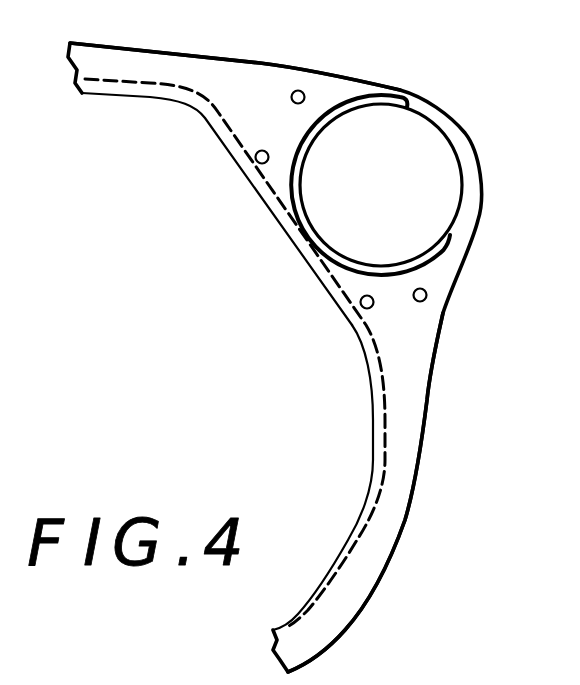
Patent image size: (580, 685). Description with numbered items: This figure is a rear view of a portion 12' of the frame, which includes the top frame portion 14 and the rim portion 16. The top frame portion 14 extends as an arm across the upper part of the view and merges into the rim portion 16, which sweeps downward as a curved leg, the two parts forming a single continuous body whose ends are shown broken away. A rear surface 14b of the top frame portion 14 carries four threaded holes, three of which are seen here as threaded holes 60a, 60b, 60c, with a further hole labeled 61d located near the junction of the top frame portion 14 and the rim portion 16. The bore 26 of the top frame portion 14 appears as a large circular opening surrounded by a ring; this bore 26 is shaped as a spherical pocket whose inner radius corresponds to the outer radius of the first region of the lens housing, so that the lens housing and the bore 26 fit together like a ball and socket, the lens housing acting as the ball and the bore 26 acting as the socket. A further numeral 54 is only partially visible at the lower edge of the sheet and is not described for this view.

The portion of the frame 12' is at (296, 357).
The top frame portion 14 is at (185, 65).
The rear surface 14b is at (252, 103).
The rim portion 16 is at (408, 408).
The bore 26 is at (428, 176).
The threaded hole 60a is at (302, 90).
The threaded hole 60b is at (258, 164).
The threaded hole 60c is at (427, 295).
The mounting hole 61d is at (361, 306).
The partially visible numeral at sheet edge 54 is at (149, 680).